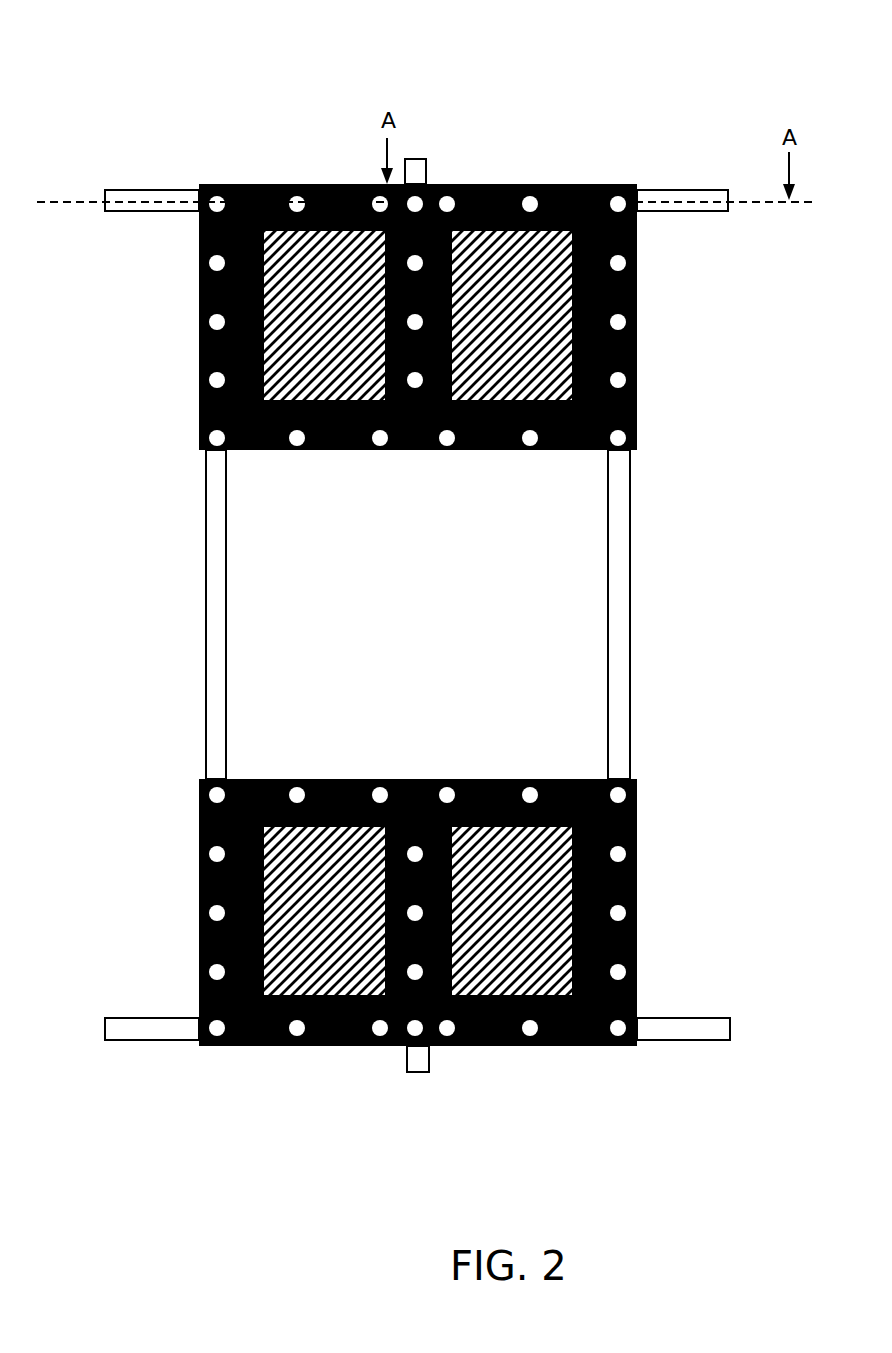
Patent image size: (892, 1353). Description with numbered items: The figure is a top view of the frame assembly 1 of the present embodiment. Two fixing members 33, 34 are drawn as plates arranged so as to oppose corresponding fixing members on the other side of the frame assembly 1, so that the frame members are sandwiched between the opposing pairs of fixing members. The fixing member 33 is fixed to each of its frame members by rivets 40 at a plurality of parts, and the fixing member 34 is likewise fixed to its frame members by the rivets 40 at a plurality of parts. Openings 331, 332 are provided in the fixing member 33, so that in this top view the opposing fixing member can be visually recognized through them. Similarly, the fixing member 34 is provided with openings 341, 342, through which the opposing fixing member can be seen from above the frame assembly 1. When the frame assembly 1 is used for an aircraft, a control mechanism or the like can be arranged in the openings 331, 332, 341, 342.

The frame assembly 1 is at (761, 82).
The fixing member 33 is at (637, 346).
The fixing member 34 is at (637, 890).
The opening 331 is at (324, 315).
The opening 332 is at (512, 315).
The opening 341 is at (324, 911).
The opening 342 is at (512, 911).
The rivets 40 is at (199, 333).